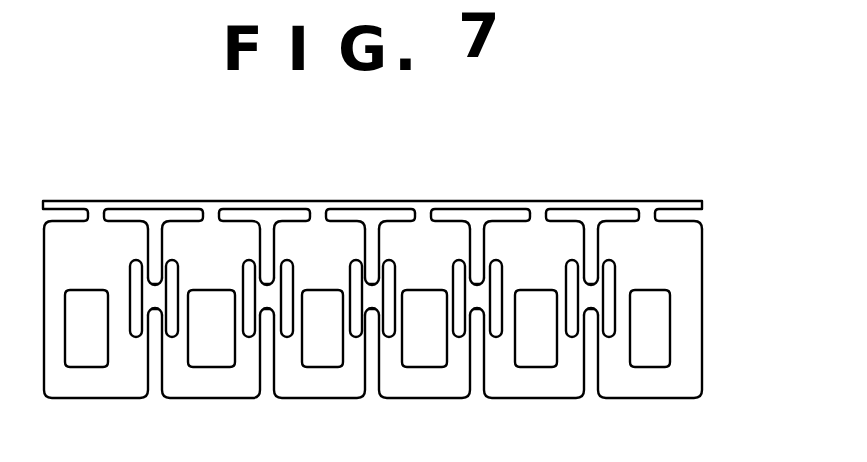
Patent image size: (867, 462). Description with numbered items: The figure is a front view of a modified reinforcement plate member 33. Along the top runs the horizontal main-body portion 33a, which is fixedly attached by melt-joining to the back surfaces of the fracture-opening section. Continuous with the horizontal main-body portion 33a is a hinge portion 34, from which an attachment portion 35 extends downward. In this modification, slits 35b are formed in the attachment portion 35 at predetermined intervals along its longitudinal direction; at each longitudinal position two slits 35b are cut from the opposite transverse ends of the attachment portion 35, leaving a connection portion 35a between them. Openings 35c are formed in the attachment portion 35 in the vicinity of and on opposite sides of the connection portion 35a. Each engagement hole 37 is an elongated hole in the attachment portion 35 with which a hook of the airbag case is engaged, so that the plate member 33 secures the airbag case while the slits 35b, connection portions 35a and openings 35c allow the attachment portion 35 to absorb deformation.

The reinforcement plate member 33 is at (658, 192).
The horizontal main-body portion 33a is at (63, 200).
The hinge portion 34 is at (317, 203).
The attachment portion 35 is at (687, 262).
The connection portion 35a is at (588, 296).
The slit 35b is at (593, 257).
The opening 35c is at (570, 270).
The engagement hole 37 is at (661, 320).